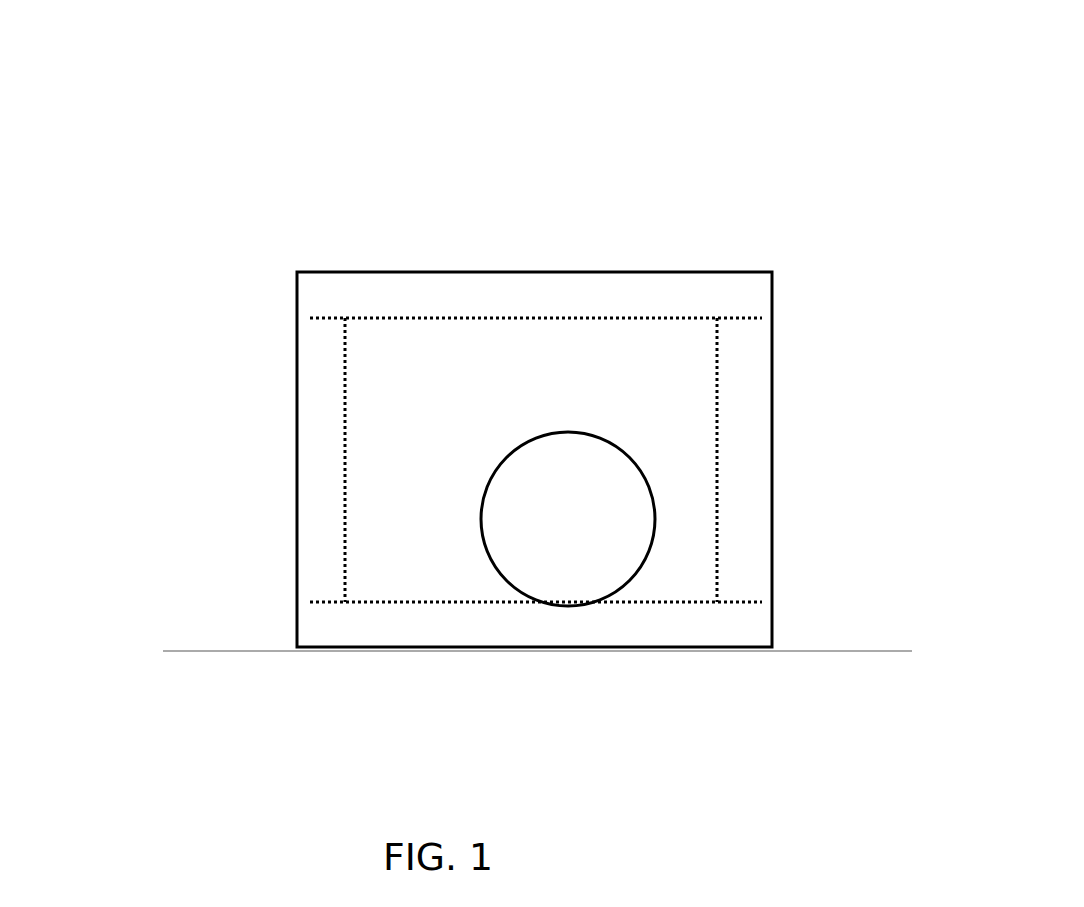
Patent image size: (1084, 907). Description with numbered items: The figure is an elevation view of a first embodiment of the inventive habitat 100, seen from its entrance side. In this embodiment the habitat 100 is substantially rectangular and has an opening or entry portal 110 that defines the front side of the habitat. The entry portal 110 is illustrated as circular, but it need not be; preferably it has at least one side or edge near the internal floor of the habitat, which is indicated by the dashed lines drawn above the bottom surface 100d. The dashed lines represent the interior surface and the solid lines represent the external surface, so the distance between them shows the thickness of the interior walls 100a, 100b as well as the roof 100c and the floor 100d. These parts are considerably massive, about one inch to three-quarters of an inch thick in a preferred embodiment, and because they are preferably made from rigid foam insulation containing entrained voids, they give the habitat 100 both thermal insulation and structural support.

The habitat 100 is at (328, 190).
The interior wall 100a is at (320, 435).
The interior wall 100b is at (755, 385).
The roof 100c is at (533, 298).
The bottom surface 100d is at (525, 619).
The entry portal 110 is at (620, 503).